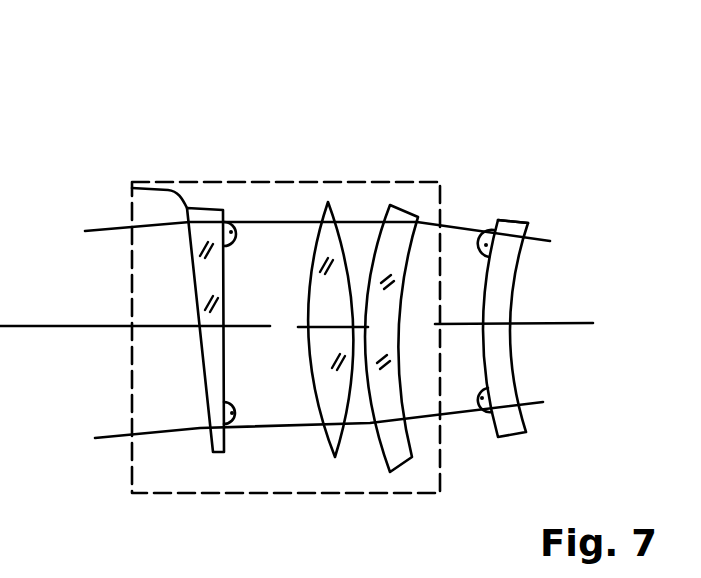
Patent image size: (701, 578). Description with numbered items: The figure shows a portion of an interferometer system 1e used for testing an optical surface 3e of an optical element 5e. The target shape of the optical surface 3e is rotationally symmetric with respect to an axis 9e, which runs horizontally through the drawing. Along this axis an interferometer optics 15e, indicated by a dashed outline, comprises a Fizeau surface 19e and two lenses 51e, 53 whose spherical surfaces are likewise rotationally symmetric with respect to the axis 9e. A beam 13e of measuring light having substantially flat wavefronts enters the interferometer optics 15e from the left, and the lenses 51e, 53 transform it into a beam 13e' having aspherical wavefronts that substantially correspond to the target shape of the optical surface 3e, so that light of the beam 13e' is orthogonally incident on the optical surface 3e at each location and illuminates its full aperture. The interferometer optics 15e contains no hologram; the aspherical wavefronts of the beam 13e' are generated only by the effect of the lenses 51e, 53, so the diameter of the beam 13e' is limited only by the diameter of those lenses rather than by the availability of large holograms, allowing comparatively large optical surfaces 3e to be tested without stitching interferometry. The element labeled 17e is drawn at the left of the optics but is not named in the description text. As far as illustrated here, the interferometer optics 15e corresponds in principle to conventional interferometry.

The interferometer system 1e is at (289, 117).
The optical surface 3e is at (498, 229).
The optical element 5e is at (505, 222).
The axis 9e is at (568, 321).
The beam of measuring light 13e is at (192, 385).
The beam having aspherical wavefronts 13e' is at (482, 367).
The interferometer optics 15e is at (318, 181).
The lens mount 17e is at (132, 189).
The Fizeau surface 19e is at (225, 213).
The lens 51e is at (337, 458).
The lens 53 is at (407, 473).